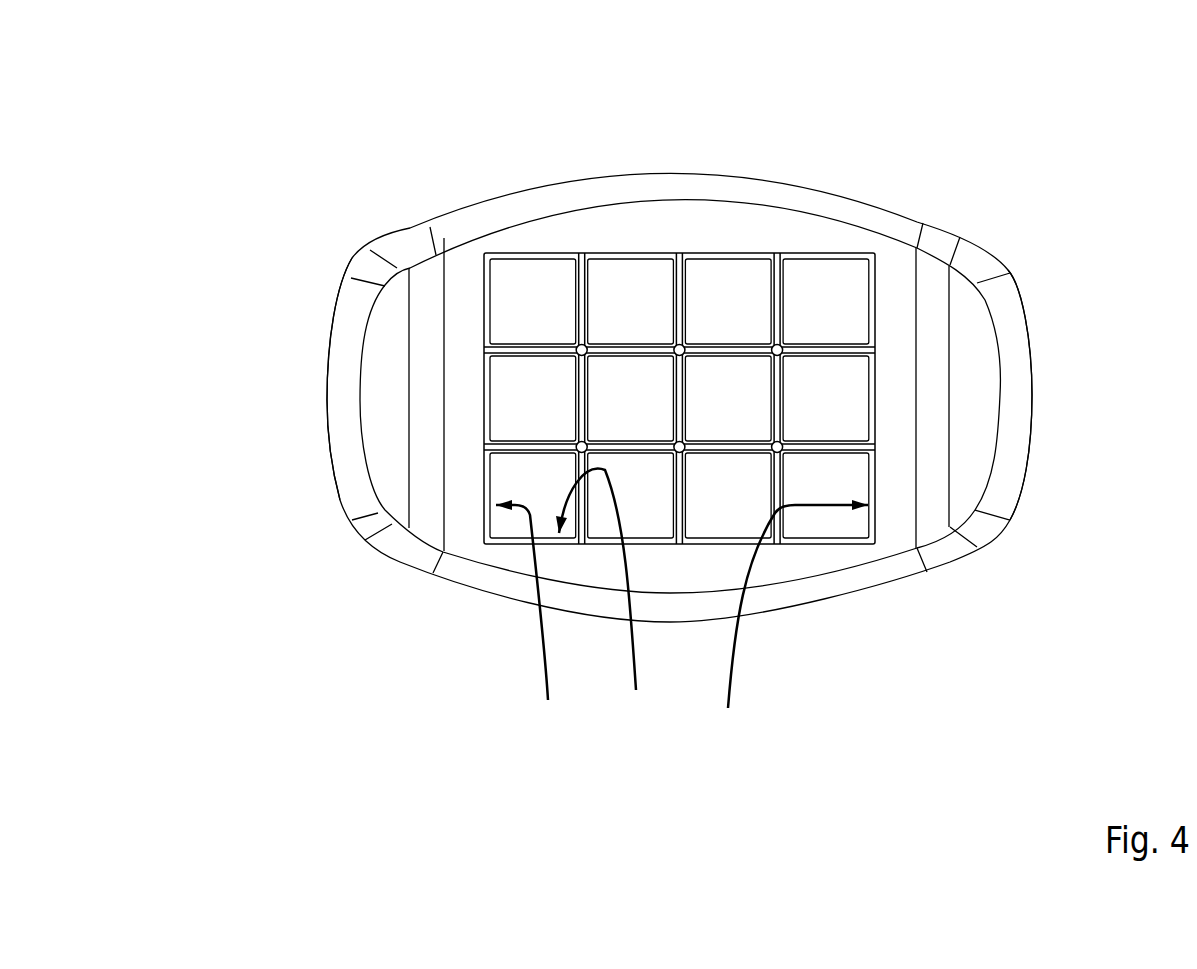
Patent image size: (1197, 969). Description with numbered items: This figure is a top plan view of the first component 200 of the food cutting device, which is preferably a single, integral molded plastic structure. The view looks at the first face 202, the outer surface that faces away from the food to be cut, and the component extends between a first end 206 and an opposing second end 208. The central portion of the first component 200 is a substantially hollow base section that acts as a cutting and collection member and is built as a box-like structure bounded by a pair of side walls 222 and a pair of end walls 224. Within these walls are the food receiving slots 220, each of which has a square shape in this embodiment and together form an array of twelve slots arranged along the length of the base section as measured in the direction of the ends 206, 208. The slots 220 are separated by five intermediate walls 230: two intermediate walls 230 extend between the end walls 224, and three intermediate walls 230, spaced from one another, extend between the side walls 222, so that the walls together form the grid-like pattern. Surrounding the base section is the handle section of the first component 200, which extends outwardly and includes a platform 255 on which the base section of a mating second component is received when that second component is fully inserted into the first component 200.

The first component 200 is at (827, 163).
The first face 202 is at (967, 358).
The first end 206 is at (326, 440).
The second end 208 is at (1035, 392).
The food receiving slots 220 is at (531, 300).
The side walls 222 is at (616, 606).
The end walls 224 is at (682, 630).
The intermediate walls 230 is at (663, 340).
The platform 255 is at (455, 308).